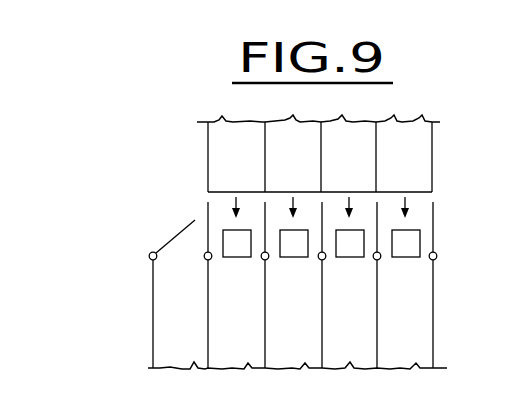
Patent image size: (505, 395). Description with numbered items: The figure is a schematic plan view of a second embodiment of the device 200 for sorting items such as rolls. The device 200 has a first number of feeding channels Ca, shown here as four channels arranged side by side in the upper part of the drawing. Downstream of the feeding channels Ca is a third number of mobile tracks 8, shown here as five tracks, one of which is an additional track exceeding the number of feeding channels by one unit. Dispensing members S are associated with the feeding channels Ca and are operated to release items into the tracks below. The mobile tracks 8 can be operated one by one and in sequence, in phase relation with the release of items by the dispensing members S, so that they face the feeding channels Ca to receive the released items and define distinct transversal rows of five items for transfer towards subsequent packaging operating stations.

The device 200 is at (78, 143).
The feeding channels Ca is at (196, 166).
The dispensing members S is at (197, 191).
The mobile tracks 8 is at (445, 218).